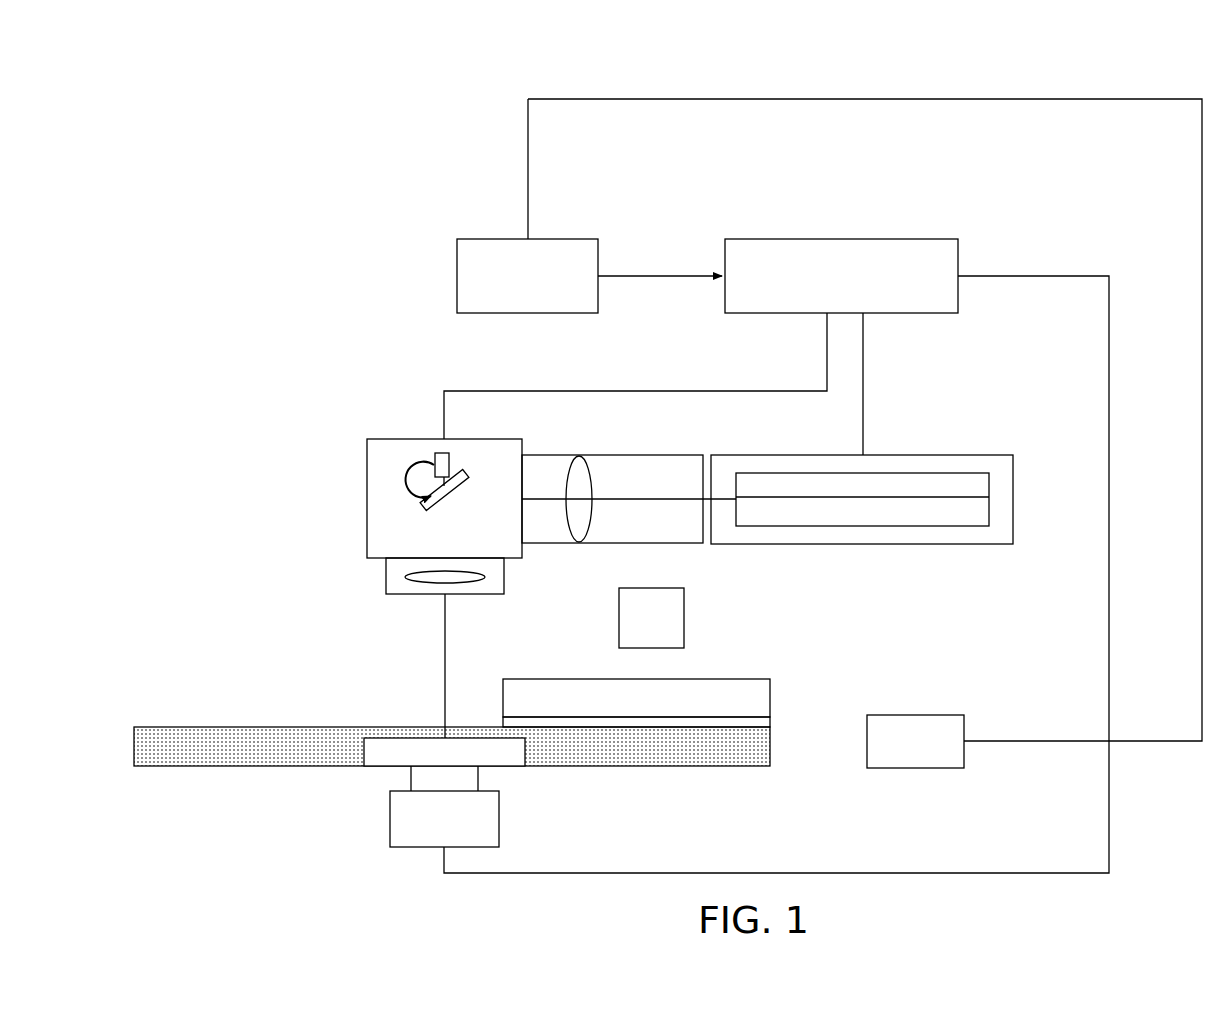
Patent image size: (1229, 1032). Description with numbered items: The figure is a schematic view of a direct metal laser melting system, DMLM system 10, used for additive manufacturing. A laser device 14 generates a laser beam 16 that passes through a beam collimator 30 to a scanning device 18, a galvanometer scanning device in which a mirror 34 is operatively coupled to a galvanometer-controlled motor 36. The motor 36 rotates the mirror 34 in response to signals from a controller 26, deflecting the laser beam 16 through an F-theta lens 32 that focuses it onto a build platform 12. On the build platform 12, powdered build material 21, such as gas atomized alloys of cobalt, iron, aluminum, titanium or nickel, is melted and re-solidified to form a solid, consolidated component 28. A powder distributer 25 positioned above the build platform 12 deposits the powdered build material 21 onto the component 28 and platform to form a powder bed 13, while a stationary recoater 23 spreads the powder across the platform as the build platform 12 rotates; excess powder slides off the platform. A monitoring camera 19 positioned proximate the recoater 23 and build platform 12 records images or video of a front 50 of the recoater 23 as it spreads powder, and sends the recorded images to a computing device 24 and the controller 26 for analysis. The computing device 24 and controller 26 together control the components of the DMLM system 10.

The DMLM system 10 is at (968, 66).
The build platform 12 is at (246, 727).
The powder bed 13 is at (478, 738).
The laser device 14 is at (948, 472).
The laser beam 16 is at (663, 490).
The scanning device 18 is at (385, 439).
The monitoring camera 19 is at (918, 715).
The powdered build material 21 is at (633, 740).
The recoater 23 is at (532, 679).
The computing device 24 is at (487, 239).
The powder distributer 25 is at (684, 598).
The controller 26 is at (845, 239).
The component 28 is at (505, 740).
The beam collimator 30 is at (590, 465).
The F-theta lens 32 is at (405, 577).
The mirror 34 is at (463, 471).
The galvanometer-controlled motor 36 is at (437, 452).
The front of recoater 50 is at (745, 691).